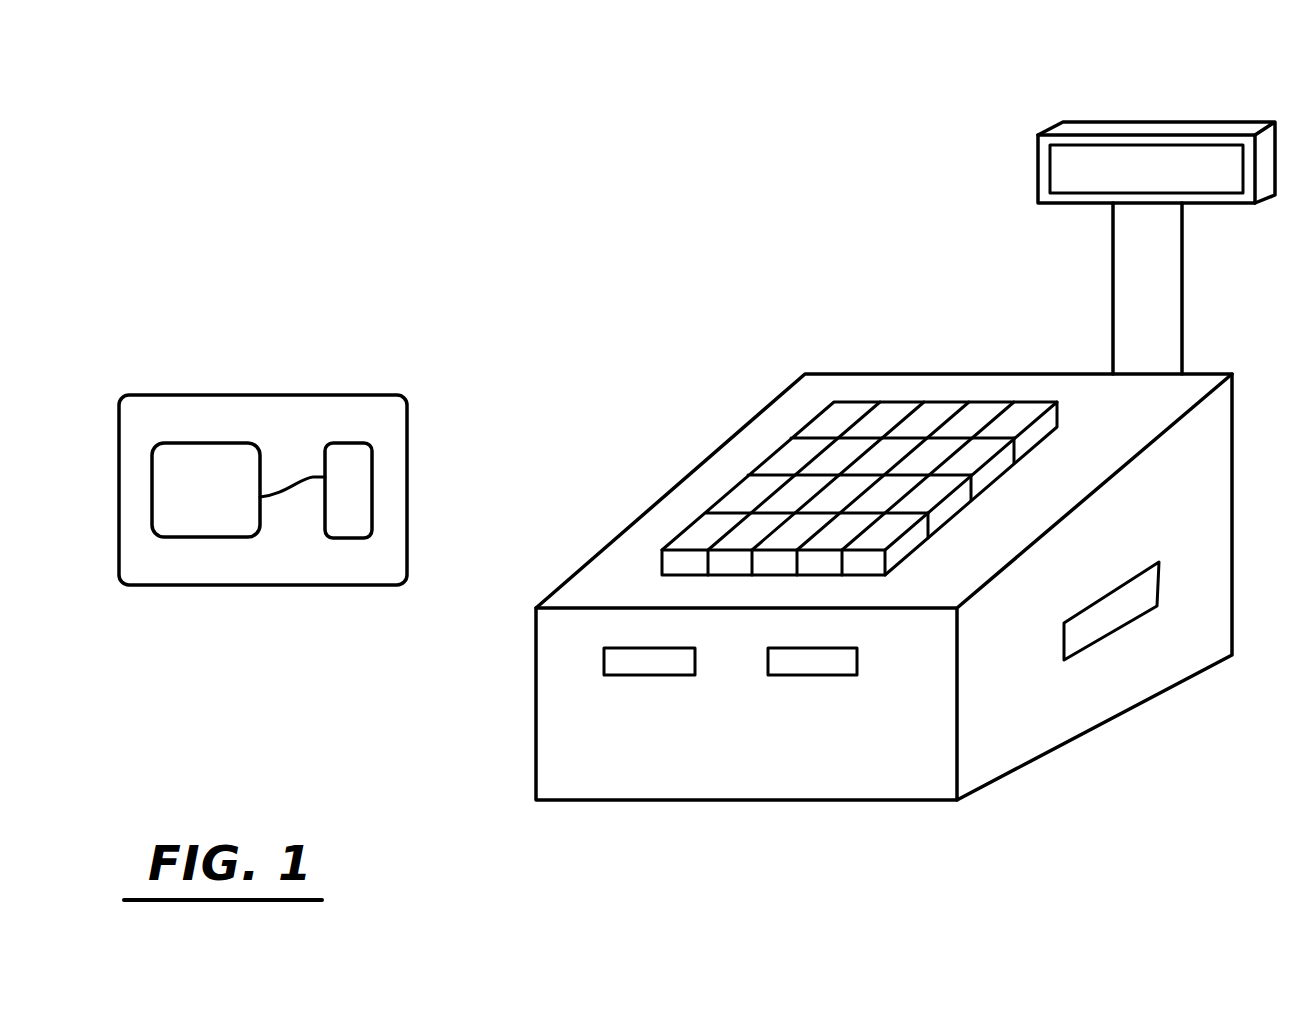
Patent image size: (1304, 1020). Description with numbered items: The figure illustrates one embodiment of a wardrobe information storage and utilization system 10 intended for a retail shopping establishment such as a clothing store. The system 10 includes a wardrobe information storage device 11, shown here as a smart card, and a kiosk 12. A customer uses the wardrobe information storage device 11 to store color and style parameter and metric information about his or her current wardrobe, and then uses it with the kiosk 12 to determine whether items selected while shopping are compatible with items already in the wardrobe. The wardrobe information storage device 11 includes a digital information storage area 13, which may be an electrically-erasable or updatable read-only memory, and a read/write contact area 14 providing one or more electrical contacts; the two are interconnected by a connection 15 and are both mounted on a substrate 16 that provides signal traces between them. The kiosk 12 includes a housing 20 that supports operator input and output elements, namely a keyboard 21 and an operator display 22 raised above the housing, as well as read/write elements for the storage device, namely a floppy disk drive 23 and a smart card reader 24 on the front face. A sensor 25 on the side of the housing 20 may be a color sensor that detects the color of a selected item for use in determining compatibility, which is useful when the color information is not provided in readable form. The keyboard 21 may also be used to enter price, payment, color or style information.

The wardrobe information storage and utilization system 10 is at (485, 94).
The wardrobe information storage device 11 is at (173, 588).
The kiosk 12 is at (673, 384).
The digital information storage area 13 is at (151, 497).
The read/write contact area 14 is at (373, 497).
The connection 15 is at (298, 477).
The substrate 16 is at (281, 556).
The housing 20 is at (535, 675).
The keyboard 21 is at (730, 475).
The operator display 22 is at (1038, 172).
The floppy disk drive 23 is at (627, 676).
The smart card reader 24 is at (803, 676).
The sensor 25 is at (1102, 640).